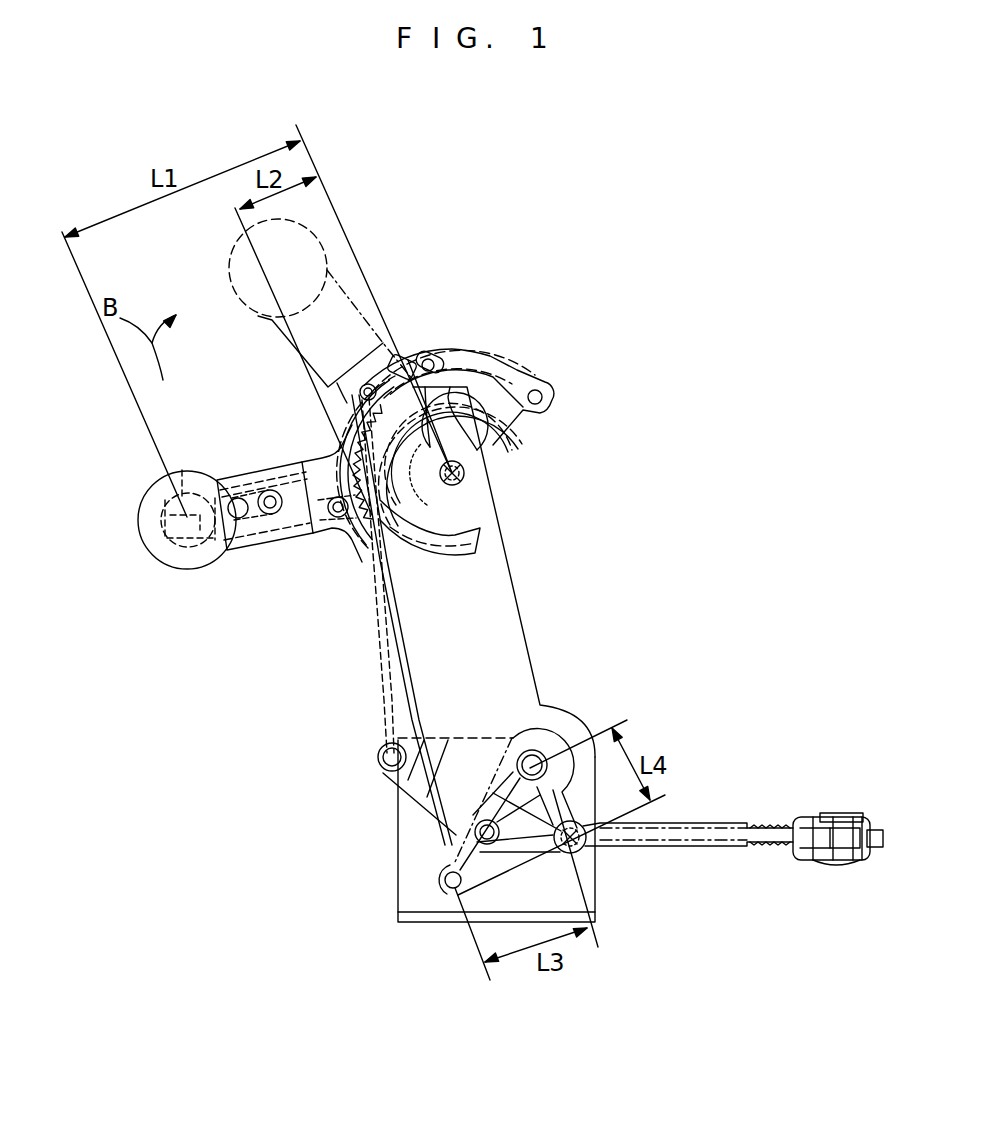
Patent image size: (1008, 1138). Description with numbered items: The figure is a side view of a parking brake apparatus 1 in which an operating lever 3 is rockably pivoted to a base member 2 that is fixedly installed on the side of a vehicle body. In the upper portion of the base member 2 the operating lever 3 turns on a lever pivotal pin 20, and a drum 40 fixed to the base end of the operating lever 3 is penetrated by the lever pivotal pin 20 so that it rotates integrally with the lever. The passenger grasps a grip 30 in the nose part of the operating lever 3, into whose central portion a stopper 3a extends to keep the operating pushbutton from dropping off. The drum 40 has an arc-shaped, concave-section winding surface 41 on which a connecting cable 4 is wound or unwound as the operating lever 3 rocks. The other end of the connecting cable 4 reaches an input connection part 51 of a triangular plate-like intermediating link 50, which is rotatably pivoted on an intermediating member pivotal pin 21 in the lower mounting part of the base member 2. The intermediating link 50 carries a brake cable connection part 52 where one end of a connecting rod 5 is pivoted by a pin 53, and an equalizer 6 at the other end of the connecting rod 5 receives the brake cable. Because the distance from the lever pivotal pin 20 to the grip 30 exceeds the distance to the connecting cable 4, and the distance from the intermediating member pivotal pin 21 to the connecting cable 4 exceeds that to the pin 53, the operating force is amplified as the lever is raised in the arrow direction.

The parking brake apparatus 1 is at (493, 288).
The base member 2 is at (487, 578).
The operating lever 3 is at (258, 548).
The stopper 3a is at (178, 553).
The connecting cable 4 is at (397, 643).
The connecting rod 5 is at (712, 837).
The equalizer 6 is at (825, 813).
The lever pivotal pin 20 is at (464, 473).
The intermediating member pivotal pin 21 is at (537, 770).
The grip 30 is at (142, 487).
The drum 40 is at (500, 392).
The winding surface 41 is at (408, 360).
The intermediating link 50 is at (533, 745).
The input connection part 51 is at (448, 890).
The brake cable connection part 52 is at (540, 858).
The pin 53 is at (580, 853).